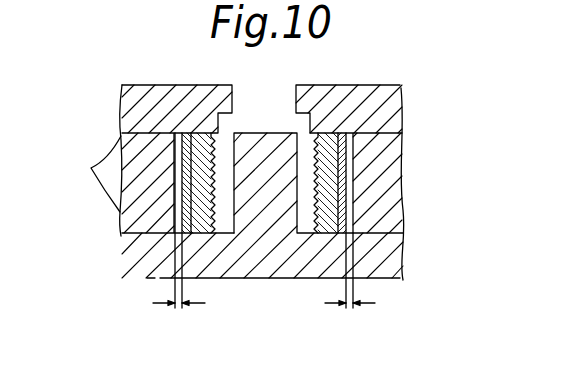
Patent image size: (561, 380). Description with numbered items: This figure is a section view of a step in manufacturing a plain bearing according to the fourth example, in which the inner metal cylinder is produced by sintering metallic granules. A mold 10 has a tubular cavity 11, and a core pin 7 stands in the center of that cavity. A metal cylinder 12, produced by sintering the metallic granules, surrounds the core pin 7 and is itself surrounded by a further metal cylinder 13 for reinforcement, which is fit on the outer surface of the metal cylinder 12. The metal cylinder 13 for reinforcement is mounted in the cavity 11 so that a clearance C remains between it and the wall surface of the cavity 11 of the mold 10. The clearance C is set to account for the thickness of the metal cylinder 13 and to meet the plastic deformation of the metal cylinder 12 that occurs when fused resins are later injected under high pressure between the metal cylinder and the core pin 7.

The mold 10 is at (131, 176).
The core pin 7 is at (263, 279).
The cavity 11 is at (224, 222).
The metal cylinder 12 is at (327, 168).
The metal cylinder for reinforcement 13 is at (340, 195).
The clearance C is at (264, 318).